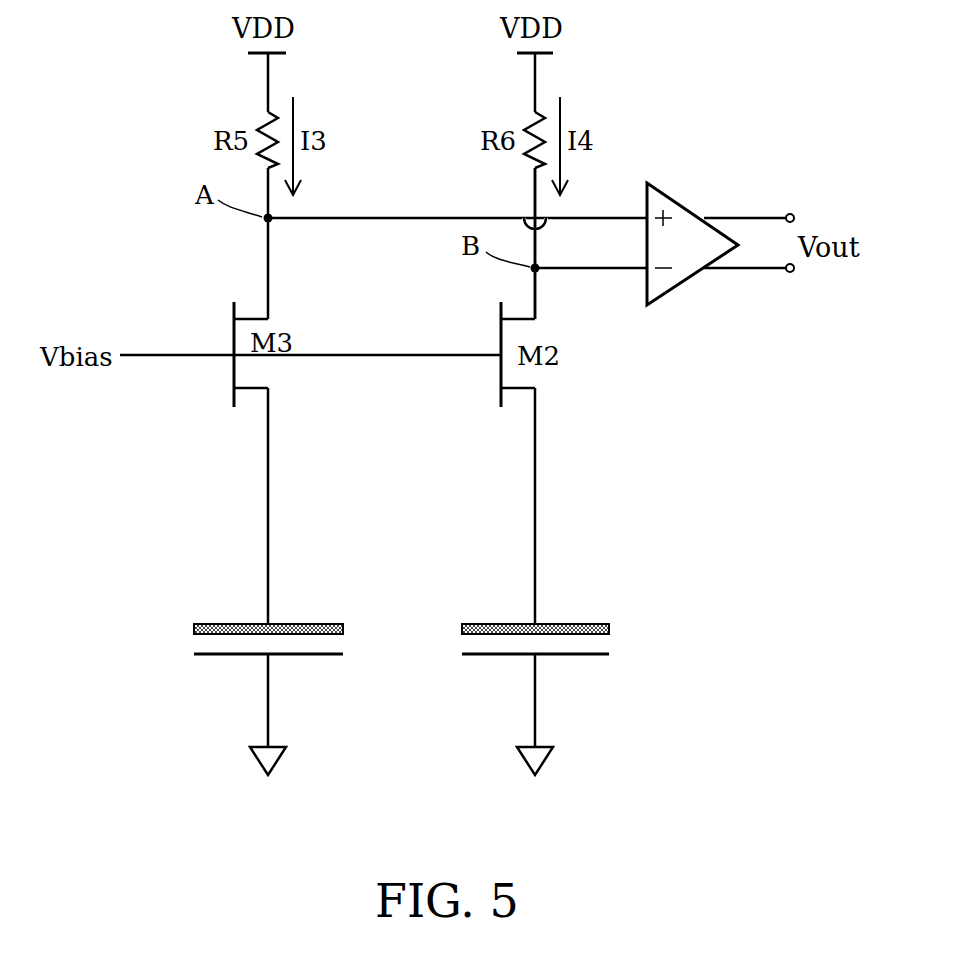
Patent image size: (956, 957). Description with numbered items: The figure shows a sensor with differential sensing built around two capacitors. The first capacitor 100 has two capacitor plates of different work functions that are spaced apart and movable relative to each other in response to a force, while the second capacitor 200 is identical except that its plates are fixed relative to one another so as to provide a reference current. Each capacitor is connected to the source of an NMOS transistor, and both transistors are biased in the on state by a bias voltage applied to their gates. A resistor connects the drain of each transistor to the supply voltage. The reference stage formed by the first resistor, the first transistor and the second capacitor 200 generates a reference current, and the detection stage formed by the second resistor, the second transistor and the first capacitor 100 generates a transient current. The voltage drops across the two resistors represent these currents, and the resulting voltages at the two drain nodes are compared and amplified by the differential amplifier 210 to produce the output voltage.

The first capacitor 100 is at (491, 622).
The second capacitor 200 is at (224, 622).
The differential amplifier 210 is at (672, 194).